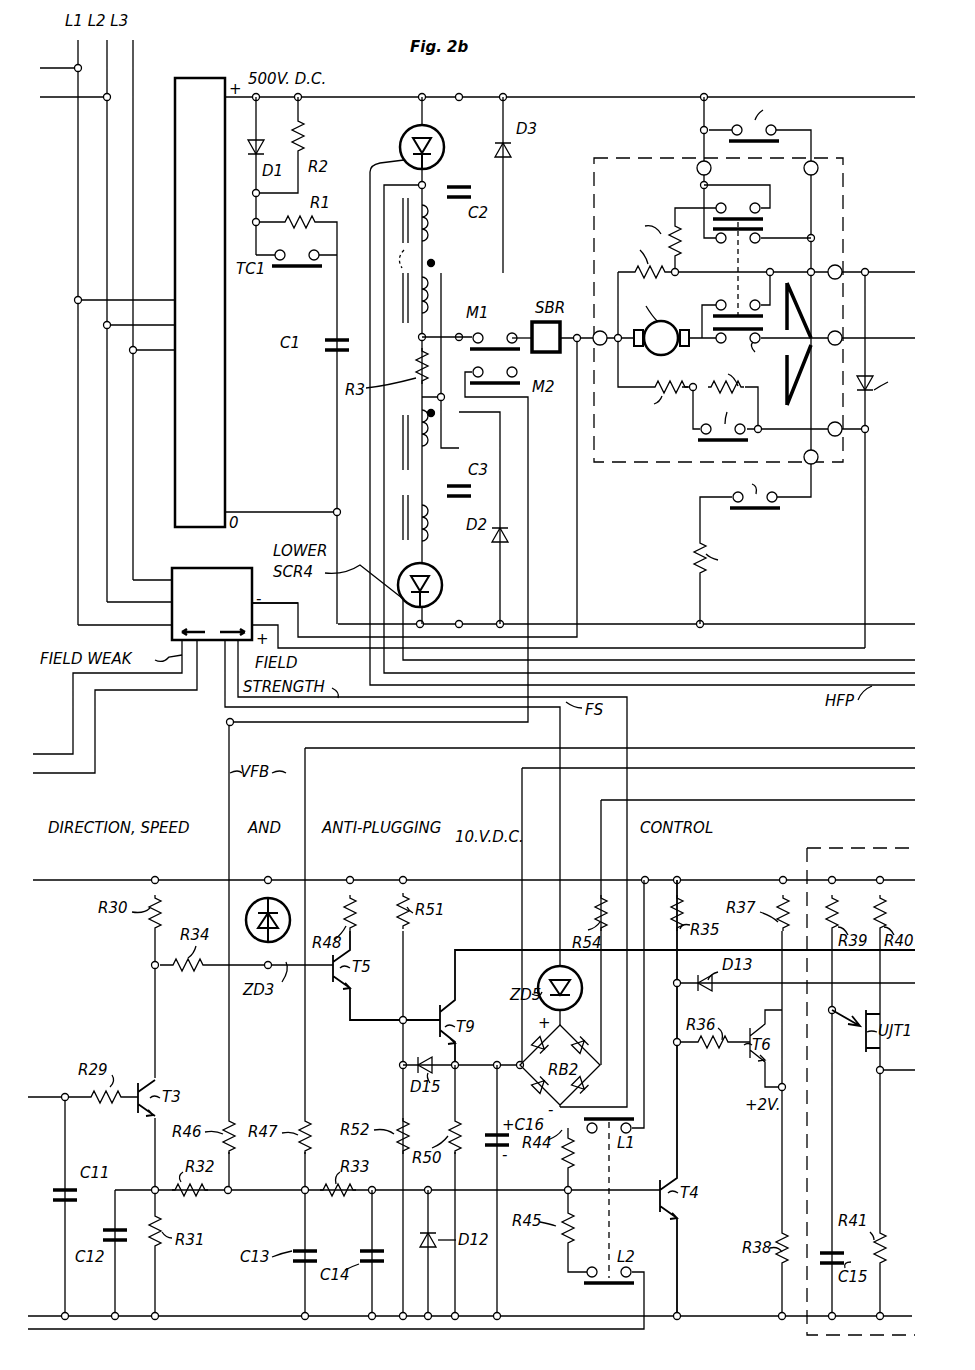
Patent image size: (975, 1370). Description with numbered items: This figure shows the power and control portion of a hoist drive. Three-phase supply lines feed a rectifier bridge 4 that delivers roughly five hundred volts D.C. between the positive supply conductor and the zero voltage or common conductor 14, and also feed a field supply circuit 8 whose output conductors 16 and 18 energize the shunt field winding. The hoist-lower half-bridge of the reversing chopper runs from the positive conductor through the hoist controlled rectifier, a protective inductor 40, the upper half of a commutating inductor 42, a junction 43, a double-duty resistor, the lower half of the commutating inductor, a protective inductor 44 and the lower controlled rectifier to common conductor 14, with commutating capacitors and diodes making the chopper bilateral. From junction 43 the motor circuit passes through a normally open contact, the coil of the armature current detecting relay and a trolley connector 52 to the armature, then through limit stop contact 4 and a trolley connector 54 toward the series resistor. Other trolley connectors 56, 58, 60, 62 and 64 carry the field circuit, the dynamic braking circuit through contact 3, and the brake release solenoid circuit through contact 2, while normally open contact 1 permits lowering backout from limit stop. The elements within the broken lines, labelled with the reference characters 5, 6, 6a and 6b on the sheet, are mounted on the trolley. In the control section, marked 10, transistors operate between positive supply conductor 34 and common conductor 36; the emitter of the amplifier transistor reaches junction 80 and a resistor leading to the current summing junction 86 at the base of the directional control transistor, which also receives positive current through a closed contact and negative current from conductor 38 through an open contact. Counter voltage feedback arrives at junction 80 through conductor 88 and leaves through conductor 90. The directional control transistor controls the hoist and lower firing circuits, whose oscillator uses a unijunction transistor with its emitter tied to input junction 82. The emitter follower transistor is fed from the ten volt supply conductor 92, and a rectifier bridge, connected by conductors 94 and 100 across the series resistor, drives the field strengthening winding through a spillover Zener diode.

The limit stop switch contact 1 is at (767, 216).
The limit stop contact 2 is at (758, 240).
The limit stop switch contact 3 is at (715, 302).
The rectifier bridge 4 is at (190, 80).
The series field / reversing arrows 5 is at (810, 312).
The reversing chopper 6 is at (754, 354).
The hoist SCR1 6a is at (404, 160).
The reversing contactor section 6b is at (754, 388).
The field supply circuit 8 is at (234, 568).
The direction, speed and anti-plugging control 10 is at (474, 864).
The common conductor 14 is at (297, 512).
The positive conductor of the field supply 16 is at (864, 550).
The field supply conductor 18 is at (577, 574).
The positive supply conductor 34 is at (348, 878).
The common conductor 36 is at (234, 1314).
The conductor 38 is at (549, 1314).
The protective inductor 40 is at (429, 231).
The commutating inductor 42 is at (391, 281).
The junction 43 is at (416, 350).
The protective inductor 44 is at (440, 534).
The trolley connector 52 is at (602, 345).
The trolley connector 54 is at (848, 333).
The trolley connector 56 is at (848, 434).
The trolley connector 58 is at (842, 270).
The trolley connector 60 is at (696, 169).
The trolley connector 62 is at (820, 464).
The trolley connector 64 is at (818, 166).
The junction 80 is at (230, 1192).
The input junction 82 is at (858, 1048).
The current summing junction 86 is at (568, 1190).
The conductor 88 is at (528, 511).
The conductor 90 is at (786, 747).
The 10 volt supply conductor 92 is at (543, 942).
The conductor 94 is at (520, 785).
The conductor 100 is at (744, 803).